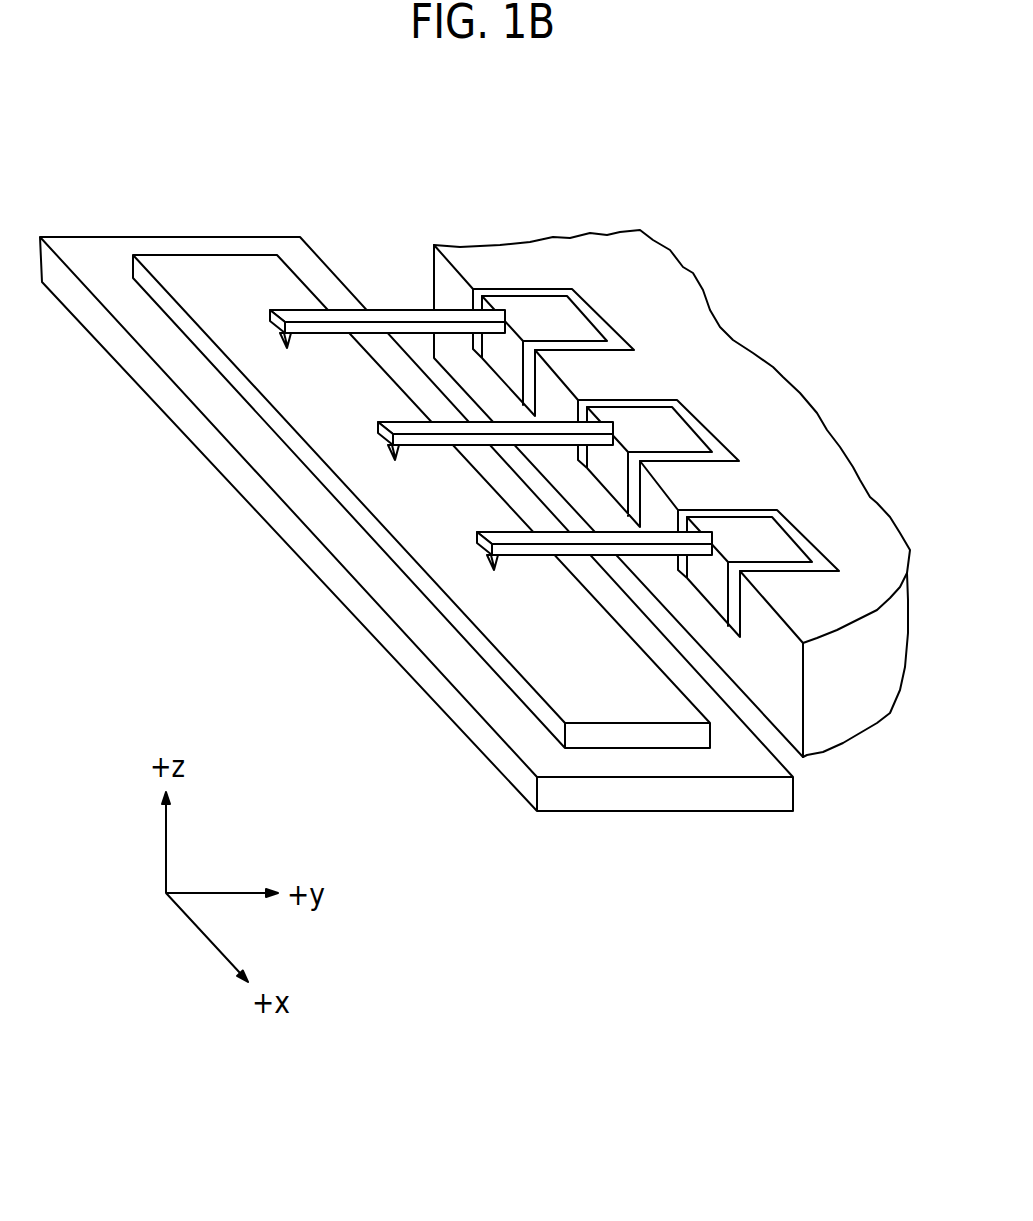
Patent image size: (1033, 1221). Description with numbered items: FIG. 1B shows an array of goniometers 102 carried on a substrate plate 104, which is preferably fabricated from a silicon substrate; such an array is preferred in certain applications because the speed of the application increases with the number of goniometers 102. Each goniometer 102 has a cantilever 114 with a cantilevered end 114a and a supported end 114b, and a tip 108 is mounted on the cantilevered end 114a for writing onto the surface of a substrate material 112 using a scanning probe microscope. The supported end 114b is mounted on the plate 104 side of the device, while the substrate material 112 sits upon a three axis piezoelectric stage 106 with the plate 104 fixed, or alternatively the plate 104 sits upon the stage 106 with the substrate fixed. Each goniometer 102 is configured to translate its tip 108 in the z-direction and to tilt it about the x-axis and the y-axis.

The goniometer 102 is at (373, 430).
The substrate plate 104 is at (678, 277).
The three axis piezoelectric stage 106 is at (690, 765).
The tip 108 is at (282, 338).
The substrate material 112 is at (518, 648).
The cantilever 114 is at (360, 317).
The cantilevered end 114a is at (292, 315).
The supported end 114b is at (487, 313).